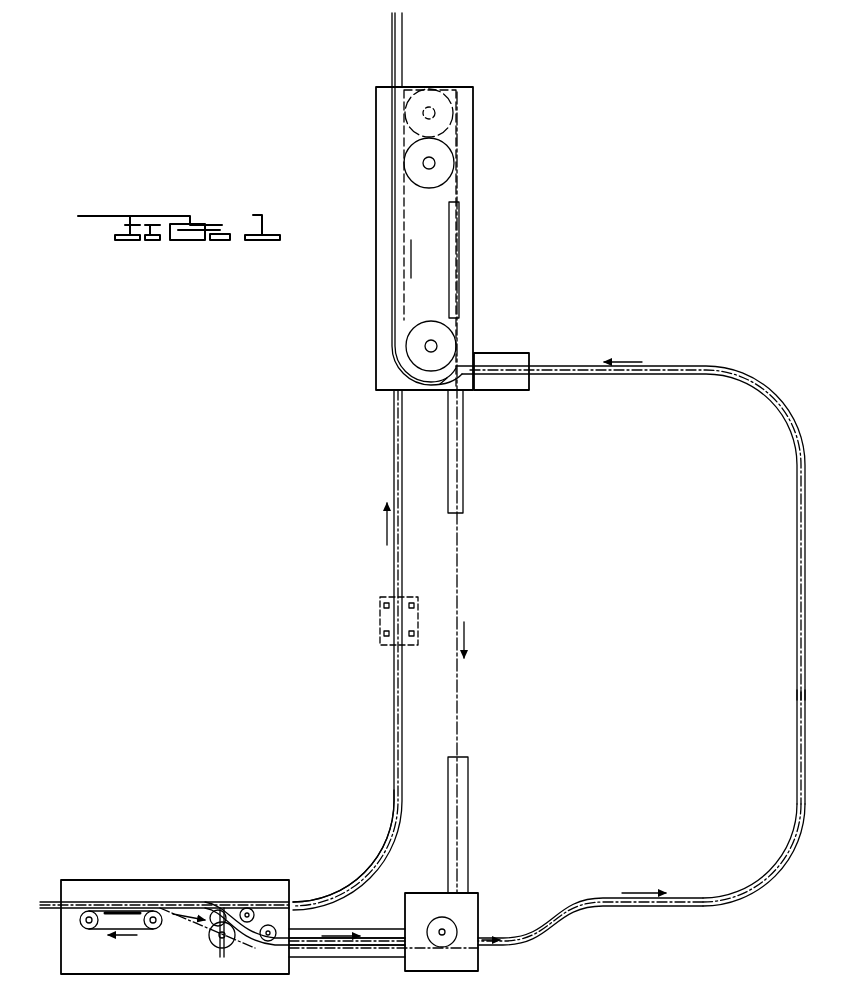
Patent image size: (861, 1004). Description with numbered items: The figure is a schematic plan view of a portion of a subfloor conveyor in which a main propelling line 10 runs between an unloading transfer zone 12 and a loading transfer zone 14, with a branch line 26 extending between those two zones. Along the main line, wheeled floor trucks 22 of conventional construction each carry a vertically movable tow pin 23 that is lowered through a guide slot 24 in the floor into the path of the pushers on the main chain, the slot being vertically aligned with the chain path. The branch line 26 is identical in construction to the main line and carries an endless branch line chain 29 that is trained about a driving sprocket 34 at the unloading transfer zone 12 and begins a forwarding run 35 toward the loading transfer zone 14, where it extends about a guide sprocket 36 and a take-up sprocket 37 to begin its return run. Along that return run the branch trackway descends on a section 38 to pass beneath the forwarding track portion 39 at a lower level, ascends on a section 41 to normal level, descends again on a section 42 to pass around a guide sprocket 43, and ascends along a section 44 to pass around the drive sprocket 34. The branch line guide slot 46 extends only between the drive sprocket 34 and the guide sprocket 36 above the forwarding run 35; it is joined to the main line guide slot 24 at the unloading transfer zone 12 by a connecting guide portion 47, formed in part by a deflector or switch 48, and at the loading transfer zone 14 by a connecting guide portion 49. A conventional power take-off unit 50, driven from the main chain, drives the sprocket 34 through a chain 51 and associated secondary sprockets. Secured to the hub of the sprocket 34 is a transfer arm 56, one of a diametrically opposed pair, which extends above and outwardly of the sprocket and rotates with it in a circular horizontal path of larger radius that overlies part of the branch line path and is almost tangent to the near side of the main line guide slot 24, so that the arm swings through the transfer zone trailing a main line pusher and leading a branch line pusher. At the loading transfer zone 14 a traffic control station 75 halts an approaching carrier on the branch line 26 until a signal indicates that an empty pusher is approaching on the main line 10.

The main propelling line 10 is at (392, 705).
The unloading transfer zone 12 is at (172, 875).
The loading transfer zone 14 is at (369, 331).
The wheeled floor trucks 22 is at (378, 630).
The tow pin 23 is at (400, 595).
The guide slot 24 is at (398, 794).
The branch line 26 is at (795, 743).
The branch line chain 29 is at (597, 378).
The driving sprocket 34 is at (226, 950).
The forwarding run 35 is at (671, 909).
The guide sprocket 36 is at (445, 346).
The take-up sprocket 37 is at (443, 163).
The descending section 38 is at (459, 265).
The forwarding track portion 39 is at (447, 377).
The ascending section 41 is at (463, 468).
The descending section 42 is at (468, 862).
The guide sprocket 43 is at (445, 950).
The ascending section 44 is at (355, 958).
The branch line guide slot 46 is at (798, 800).
The connecting guide portion 47 is at (232, 911).
The deflector or switch 48 is at (255, 906).
The connecting guide portion 49 is at (403, 380).
The power take-off unit 50 is at (147, 940).
The chain 51 is at (184, 942).
The transfer arm 56 is at (219, 908).
The traffic control station 75 is at (474, 353).